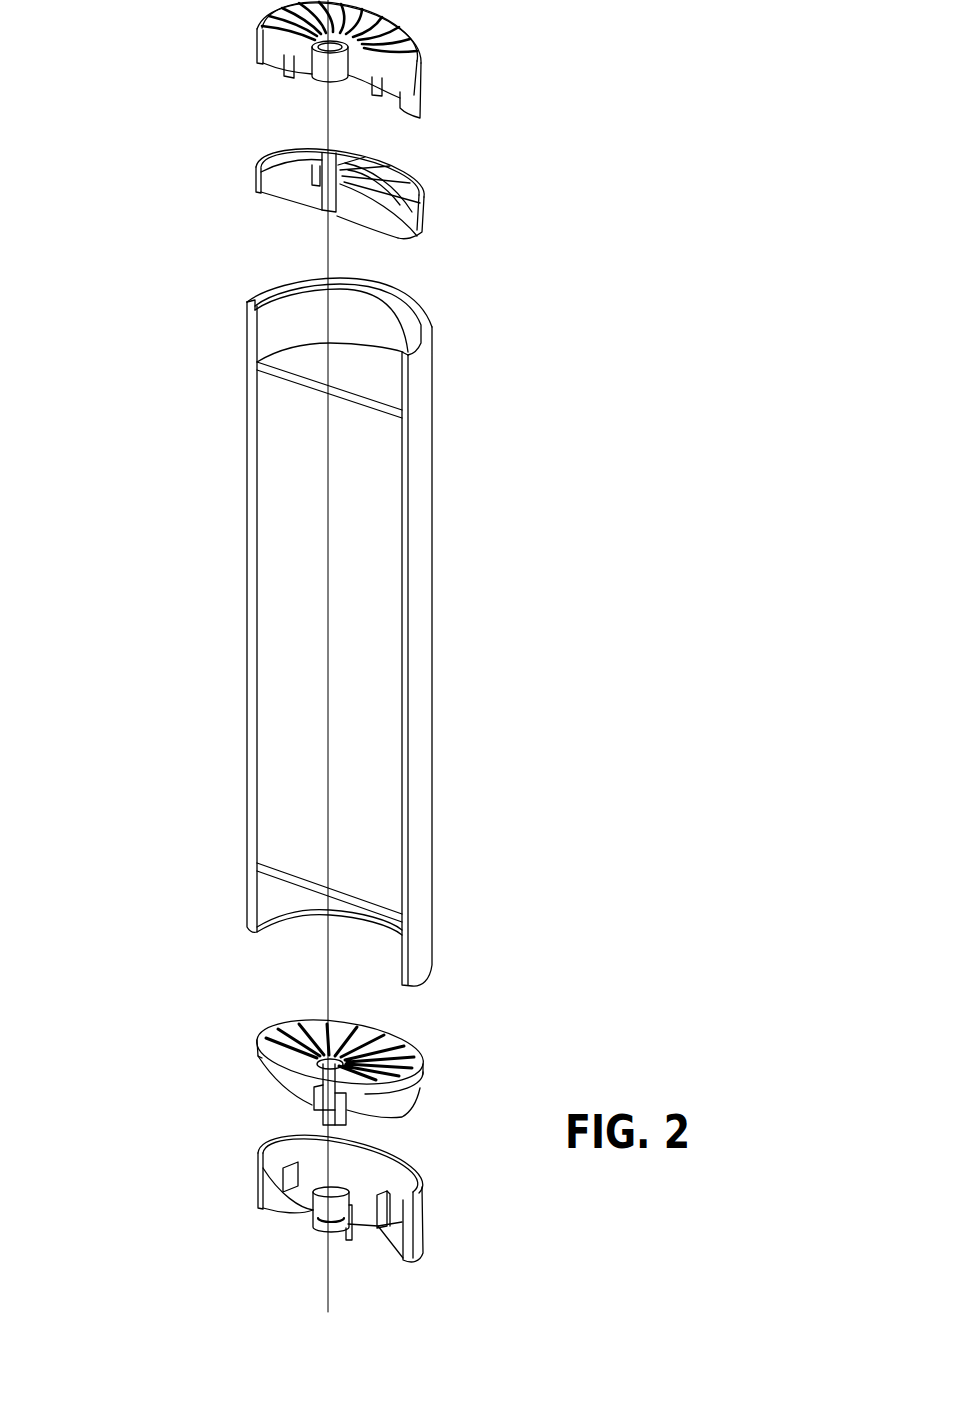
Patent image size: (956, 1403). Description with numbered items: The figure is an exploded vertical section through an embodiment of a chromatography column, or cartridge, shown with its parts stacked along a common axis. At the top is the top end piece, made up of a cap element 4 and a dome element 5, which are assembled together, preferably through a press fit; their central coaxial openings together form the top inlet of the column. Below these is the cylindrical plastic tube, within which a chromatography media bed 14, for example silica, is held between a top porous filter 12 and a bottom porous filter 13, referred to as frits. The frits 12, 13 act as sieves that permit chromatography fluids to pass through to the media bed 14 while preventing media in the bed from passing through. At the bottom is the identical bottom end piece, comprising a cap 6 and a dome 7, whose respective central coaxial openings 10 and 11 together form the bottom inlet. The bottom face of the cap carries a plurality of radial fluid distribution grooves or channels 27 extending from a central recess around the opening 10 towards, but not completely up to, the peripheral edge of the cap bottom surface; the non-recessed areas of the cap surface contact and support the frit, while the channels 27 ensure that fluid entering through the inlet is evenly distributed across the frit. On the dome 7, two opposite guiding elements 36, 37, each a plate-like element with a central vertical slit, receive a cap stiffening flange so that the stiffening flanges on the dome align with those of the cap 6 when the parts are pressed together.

The cap element 4 is at (410, 198).
The dome element 5 is at (412, 80).
The cap 6 is at (318, 1064).
The dome 7 is at (269, 1211).
The central coaxial opening 10 is at (268, 1071).
The central coaxial opening 11 is at (331, 1190).
The top porous filter 12 is at (300, 358).
The bottom porous filter 13 is at (300, 882).
The chromatography media bed 14 is at (362, 598).
The radial fluid distribution grooves 27 is at (418, 1055).
The guiding element 36 is at (270, 1190).
The guiding element 37 is at (389, 1228).